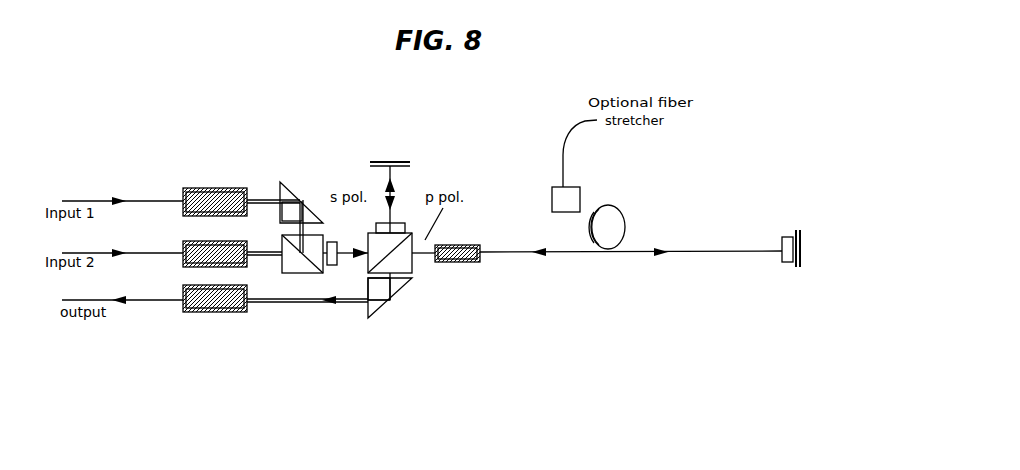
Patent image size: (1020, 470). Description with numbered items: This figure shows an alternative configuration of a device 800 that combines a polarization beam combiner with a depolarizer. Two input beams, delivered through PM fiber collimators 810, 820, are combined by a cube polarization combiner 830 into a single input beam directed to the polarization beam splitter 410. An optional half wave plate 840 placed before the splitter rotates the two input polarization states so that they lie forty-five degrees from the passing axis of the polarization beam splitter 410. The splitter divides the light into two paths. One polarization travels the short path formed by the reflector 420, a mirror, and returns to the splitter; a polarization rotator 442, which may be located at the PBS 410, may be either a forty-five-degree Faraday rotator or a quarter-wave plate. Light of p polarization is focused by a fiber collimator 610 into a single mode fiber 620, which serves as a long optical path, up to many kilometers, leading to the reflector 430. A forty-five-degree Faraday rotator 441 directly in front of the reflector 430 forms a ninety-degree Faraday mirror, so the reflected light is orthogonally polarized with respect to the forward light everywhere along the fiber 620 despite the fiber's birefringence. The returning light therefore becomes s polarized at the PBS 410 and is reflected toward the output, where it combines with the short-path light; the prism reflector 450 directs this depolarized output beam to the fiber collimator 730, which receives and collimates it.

The optical system 800 is at (296, 80).
The PM fiber collimator 810 is at (200, 177).
The PM fiber collimator 820 is at (192, 246).
The fiber collimator 730 is at (214, 322).
The cube polarization combiner 830 is at (303, 278).
The half wave plate 840 is at (332, 241).
The polarization beam splitter 410 is at (418, 272).
The reflector 420 is at (412, 164).
The polarization rotator 442 is at (410, 230).
The prism reflector 450 is at (390, 317).
The fiber collimator 610 is at (475, 265).
The single mode fiber 620 is at (600, 203).
The 45-degree Faraday rotator 441 is at (782, 219).
The reflector 430 is at (824, 244).